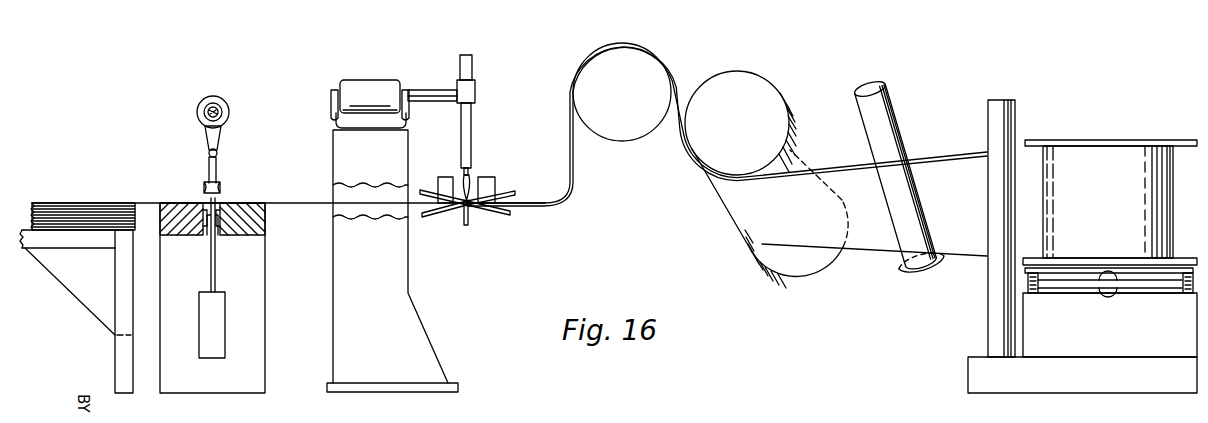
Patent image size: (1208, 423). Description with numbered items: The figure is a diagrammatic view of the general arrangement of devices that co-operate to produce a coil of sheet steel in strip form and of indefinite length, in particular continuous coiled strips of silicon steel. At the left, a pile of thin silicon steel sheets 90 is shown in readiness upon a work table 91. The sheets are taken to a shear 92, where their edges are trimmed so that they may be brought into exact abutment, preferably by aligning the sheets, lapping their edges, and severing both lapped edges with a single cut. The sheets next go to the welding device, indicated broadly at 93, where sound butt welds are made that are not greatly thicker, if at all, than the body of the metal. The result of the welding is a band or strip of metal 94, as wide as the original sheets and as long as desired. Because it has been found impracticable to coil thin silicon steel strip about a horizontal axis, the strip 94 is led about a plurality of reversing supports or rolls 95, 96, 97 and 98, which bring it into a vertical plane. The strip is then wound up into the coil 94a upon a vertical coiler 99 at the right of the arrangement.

The pile of thin silicon steel sheets 90 is at (68, 203).
The work table 91 is at (133, 287).
The shear 92 is at (220, 178).
The welding device 93 is at (380, 80).
The band or strip of metal 94 is at (571, 182).
The reversing support or roll 95 is at (620, 64).
The reversing support or roll 96 is at (766, 179).
The reversing support or roll 97 is at (898, 102).
The reversing support or roll 98 is at (1022, 104).
The vertical coiler 99 is at (1127, 143).
The coil 94a is at (1108, 202).